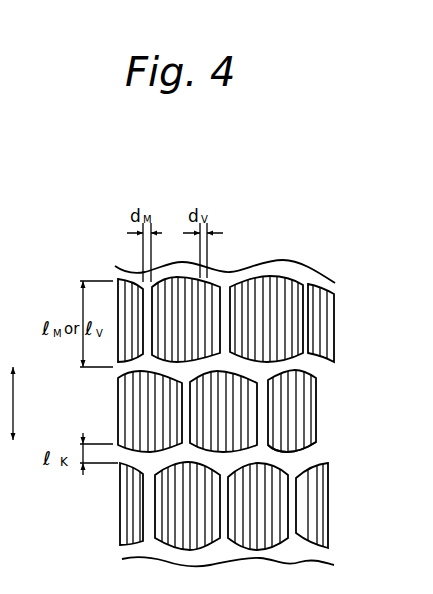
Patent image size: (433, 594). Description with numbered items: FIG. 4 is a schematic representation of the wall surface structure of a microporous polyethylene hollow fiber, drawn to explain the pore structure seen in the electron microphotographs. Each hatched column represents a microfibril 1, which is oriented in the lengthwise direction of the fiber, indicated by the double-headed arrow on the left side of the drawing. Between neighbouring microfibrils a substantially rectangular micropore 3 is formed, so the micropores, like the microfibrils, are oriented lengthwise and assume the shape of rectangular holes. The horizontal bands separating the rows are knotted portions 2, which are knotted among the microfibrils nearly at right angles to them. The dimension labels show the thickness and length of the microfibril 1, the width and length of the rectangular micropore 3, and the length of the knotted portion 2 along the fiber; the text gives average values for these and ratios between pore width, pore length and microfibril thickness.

The microfibril 1 is at (264, 407).
The knotted portion 2 is at (282, 453).
The micropore 3 is at (275, 515).